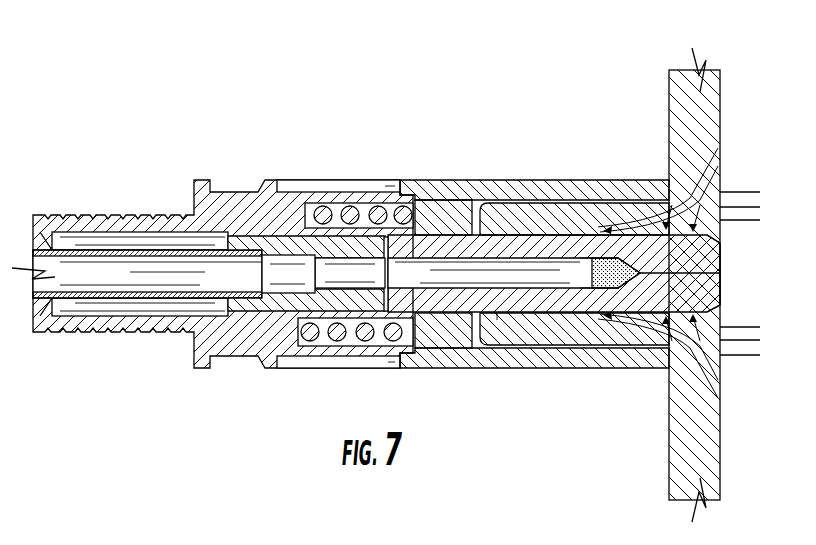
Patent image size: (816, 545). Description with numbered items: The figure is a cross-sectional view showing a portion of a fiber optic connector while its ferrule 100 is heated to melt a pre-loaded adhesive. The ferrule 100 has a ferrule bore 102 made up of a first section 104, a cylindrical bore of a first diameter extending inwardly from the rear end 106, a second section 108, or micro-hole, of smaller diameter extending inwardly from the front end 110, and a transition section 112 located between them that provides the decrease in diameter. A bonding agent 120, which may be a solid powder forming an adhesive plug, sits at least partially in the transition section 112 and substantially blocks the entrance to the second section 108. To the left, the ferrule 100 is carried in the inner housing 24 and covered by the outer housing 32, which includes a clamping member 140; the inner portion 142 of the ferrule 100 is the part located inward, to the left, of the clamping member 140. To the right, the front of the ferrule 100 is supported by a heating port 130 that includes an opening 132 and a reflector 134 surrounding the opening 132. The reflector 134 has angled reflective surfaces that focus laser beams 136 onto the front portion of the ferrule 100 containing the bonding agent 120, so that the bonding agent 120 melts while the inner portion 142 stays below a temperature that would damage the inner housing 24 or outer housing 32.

The housing 24 is at (302, 186).
The outer shroud 32 is at (443, 188).
The ferrule 100 is at (715, 313).
The ferrule bore 102 is at (515, 296).
The first section 104 is at (540, 270).
The rear end 106 is at (368, 236).
The second section 108 is at (708, 281).
The front end 110 is at (720, 254).
The transition section 112 is at (618, 257).
The bonding agent 120 is at (590, 273).
The heating port 130 is at (723, 88).
The opening 132 is at (721, 164).
The reflector 134 is at (708, 386).
The CO2 laser beams 136 is at (743, 191).
The clamping member 140 is at (497, 314).
The inner portion 142 is at (388, 374).